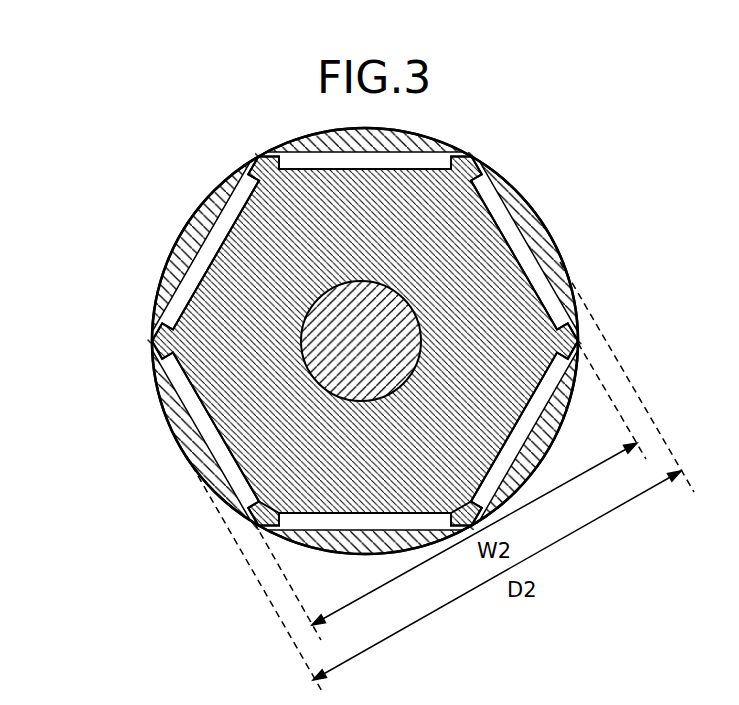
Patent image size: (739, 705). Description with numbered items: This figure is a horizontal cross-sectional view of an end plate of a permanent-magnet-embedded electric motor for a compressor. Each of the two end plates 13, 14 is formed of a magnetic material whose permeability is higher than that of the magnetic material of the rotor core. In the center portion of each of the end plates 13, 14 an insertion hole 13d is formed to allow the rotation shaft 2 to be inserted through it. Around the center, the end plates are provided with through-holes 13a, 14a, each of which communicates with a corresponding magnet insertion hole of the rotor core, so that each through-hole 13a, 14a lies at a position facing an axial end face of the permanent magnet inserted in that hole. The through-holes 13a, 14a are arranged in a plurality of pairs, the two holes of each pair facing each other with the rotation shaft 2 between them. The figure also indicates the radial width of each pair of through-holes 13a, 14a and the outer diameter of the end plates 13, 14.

The rotation shaft 2 is at (337, 362).
The end plate 13 is at (233, 298).
The end plate 14 is at (365, 341).
The through-hole 13a is at (220, 223).
The through-hole 14a is at (365, 341).
The insertion hole 13d is at (352, 396).